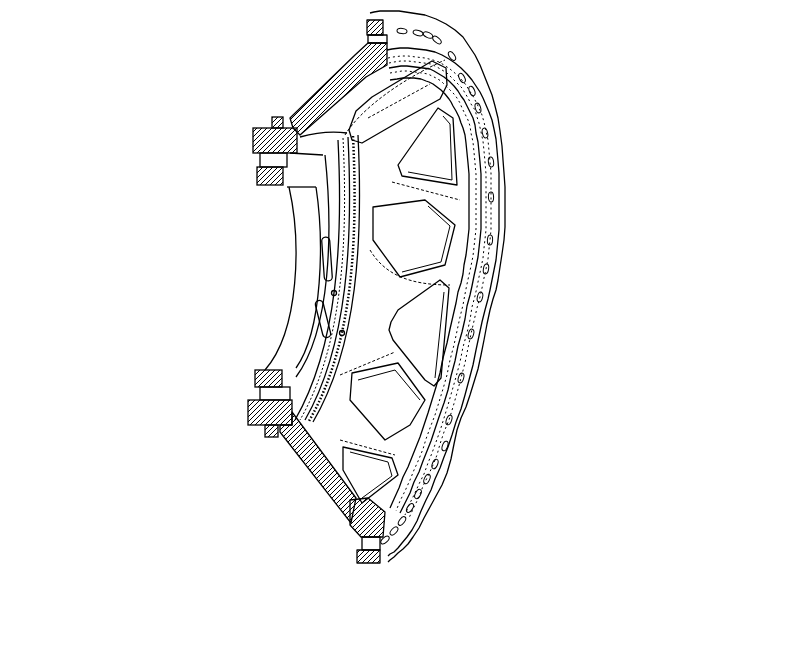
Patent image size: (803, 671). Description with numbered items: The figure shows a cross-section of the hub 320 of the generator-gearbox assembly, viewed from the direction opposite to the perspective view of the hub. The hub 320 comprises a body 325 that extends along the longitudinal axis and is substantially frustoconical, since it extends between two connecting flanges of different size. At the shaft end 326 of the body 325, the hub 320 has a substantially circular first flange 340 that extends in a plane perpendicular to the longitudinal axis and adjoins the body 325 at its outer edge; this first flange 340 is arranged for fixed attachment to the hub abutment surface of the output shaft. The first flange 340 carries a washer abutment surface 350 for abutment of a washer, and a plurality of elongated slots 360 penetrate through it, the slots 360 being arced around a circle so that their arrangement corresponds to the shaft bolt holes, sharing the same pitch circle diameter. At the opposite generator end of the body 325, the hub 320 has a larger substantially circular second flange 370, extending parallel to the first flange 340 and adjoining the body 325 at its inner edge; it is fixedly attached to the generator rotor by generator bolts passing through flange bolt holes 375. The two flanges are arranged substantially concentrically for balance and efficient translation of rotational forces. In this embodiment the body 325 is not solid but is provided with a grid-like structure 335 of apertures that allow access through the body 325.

The hub 320 is at (225, 108).
The body 325 is at (437, 193).
The shaft end 326 is at (352, 302).
The grid-like structure 335 is at (437, 247).
The first flange 340 is at (355, 333).
The washer abutment surface 350 is at (302, 367).
The elongated slots 360 is at (260, 167).
The second flange 370 is at (471, 77).
The flange bolt holes 375 is at (411, 548).